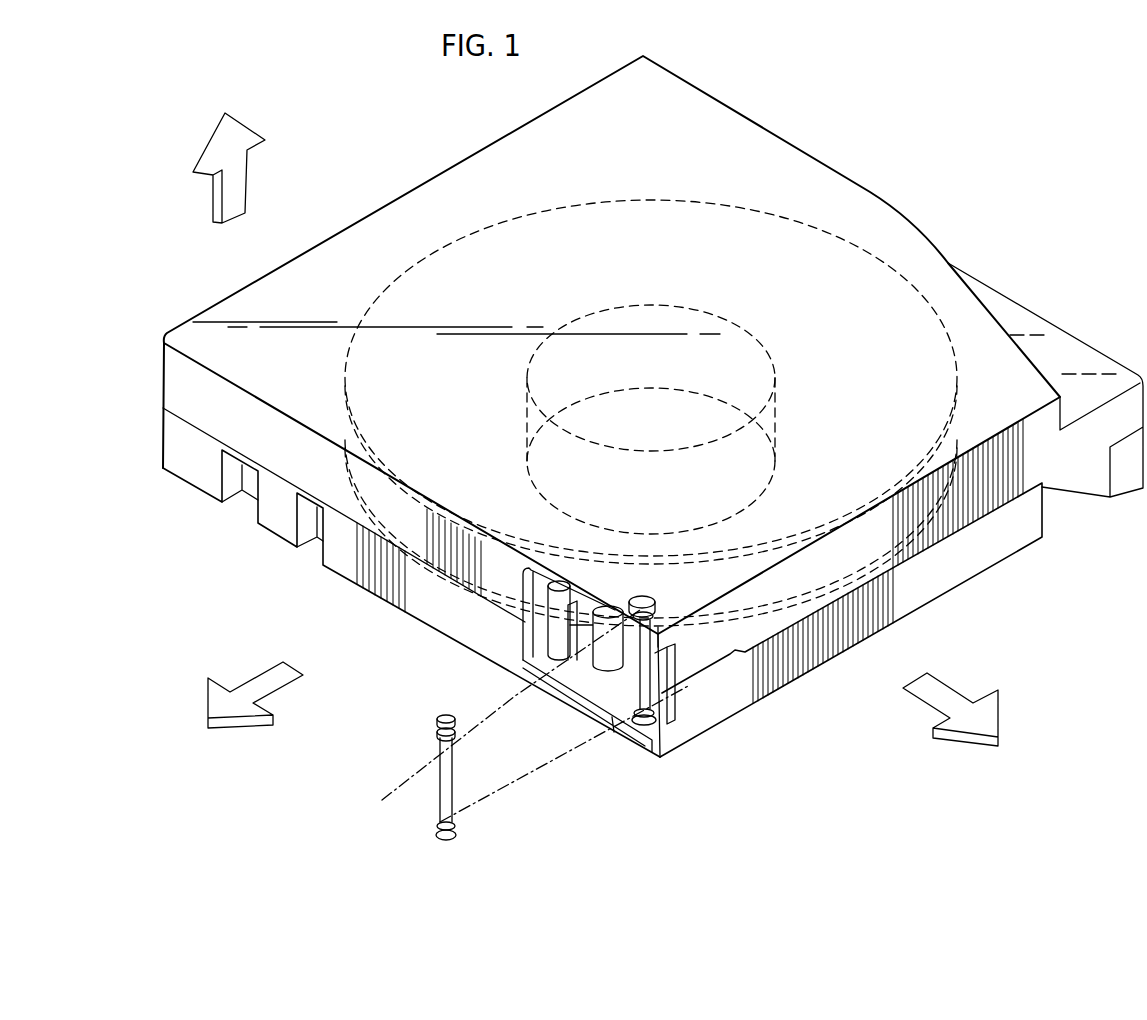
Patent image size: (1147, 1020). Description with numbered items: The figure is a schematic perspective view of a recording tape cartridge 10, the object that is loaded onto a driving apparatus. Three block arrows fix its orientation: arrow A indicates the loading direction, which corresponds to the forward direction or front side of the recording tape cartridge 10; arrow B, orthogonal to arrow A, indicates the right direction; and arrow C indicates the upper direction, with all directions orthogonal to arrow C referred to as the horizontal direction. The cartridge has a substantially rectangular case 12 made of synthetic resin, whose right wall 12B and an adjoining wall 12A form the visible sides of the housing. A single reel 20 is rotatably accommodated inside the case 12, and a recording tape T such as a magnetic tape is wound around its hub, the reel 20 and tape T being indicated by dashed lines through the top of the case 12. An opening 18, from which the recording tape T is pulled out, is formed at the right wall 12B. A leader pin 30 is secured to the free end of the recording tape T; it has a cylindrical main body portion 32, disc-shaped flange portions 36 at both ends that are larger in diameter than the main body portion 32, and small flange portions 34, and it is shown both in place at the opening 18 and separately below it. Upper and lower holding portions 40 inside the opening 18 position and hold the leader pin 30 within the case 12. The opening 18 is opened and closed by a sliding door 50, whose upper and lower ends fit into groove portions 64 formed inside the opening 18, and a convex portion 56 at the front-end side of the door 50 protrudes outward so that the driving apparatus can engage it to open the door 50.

The recording tape cartridge 10 is at (896, 156).
The case 12 is at (1022, 305).
The first side wall of chassis 12A is at (950, 568).
The right wall 12B is at (280, 522).
The opening 18 is at (525, 668).
The reel 20 is at (655, 200).
The leader pin 30 is at (647, 663).
The main body portion 32 is at (440, 808).
The small flange portions 34 is at (663, 730).
The flange portions 36 is at (643, 742).
The holding portions 40 is at (618, 735).
The door 50 is at (585, 626).
The convex portion 56 is at (527, 640).
The groove portions 64 is at (641, 603).
The arrow A is at (943, 690).
The arrow B is at (267, 680).
The arrow C is at (236, 190).
The recording tape T is at (527, 775).